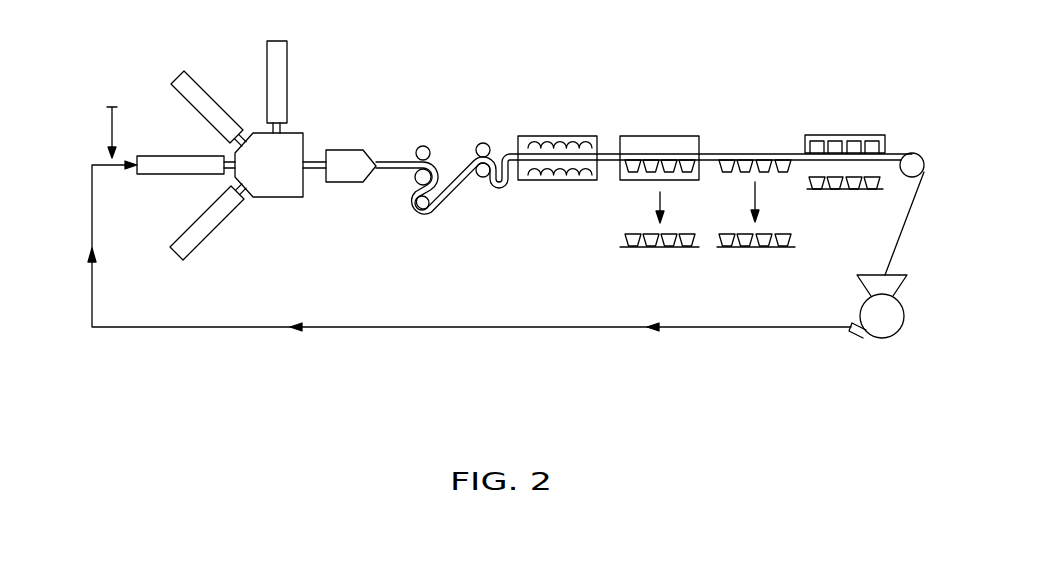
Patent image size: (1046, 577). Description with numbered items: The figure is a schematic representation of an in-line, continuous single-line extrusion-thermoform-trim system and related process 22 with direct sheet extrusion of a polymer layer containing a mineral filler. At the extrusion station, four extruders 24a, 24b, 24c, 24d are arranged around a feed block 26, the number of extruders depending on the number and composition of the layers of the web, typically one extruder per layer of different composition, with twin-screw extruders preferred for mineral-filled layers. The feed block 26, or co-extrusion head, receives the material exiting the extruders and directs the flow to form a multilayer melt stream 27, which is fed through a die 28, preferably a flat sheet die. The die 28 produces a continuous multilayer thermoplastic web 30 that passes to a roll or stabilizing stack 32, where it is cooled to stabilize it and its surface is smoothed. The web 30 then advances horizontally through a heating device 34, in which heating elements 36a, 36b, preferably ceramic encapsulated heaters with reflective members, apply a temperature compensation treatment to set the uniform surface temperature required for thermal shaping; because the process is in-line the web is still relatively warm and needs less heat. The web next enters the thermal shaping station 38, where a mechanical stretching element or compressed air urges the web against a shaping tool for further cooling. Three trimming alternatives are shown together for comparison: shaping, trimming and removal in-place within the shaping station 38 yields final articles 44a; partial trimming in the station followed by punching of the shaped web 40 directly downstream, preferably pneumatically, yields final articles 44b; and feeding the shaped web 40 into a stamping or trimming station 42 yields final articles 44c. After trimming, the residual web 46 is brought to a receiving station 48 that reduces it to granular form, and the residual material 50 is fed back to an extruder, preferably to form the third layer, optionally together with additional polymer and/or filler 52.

The in-line extrusion-thermoform-trim system and process 22 is at (746, 102).
The extruder 24a is at (287, 56).
The extruder 24b is at (198, 85).
The extruder 24c is at (155, 175).
The extruder 24d is at (218, 234).
The feed block 26 is at (280, 198).
The multilayer melt stream 27 is at (313, 162).
The die 28 is at (345, 150).
The multilayer thermoplastic web 30 is at (388, 161).
The roll stack 32 is at (423, 145).
The heating device 34 is at (534, 136).
The heating element 36a is at (557, 172).
The heating element 36b is at (556, 143).
The thermal shaping station 38 is at (660, 136).
The shaped web 40 is at (756, 196).
The trimming station 42 is at (845, 134).
The final articles 44a is at (658, 248).
The final articles 44b is at (757, 248).
The final articles 44c is at (853, 190).
The residual web 46 is at (915, 152).
The receiving station 48 is at (881, 339).
The residual material 50 is at (469, 328).
The additional polymer and/or filler 52 is at (113, 138).